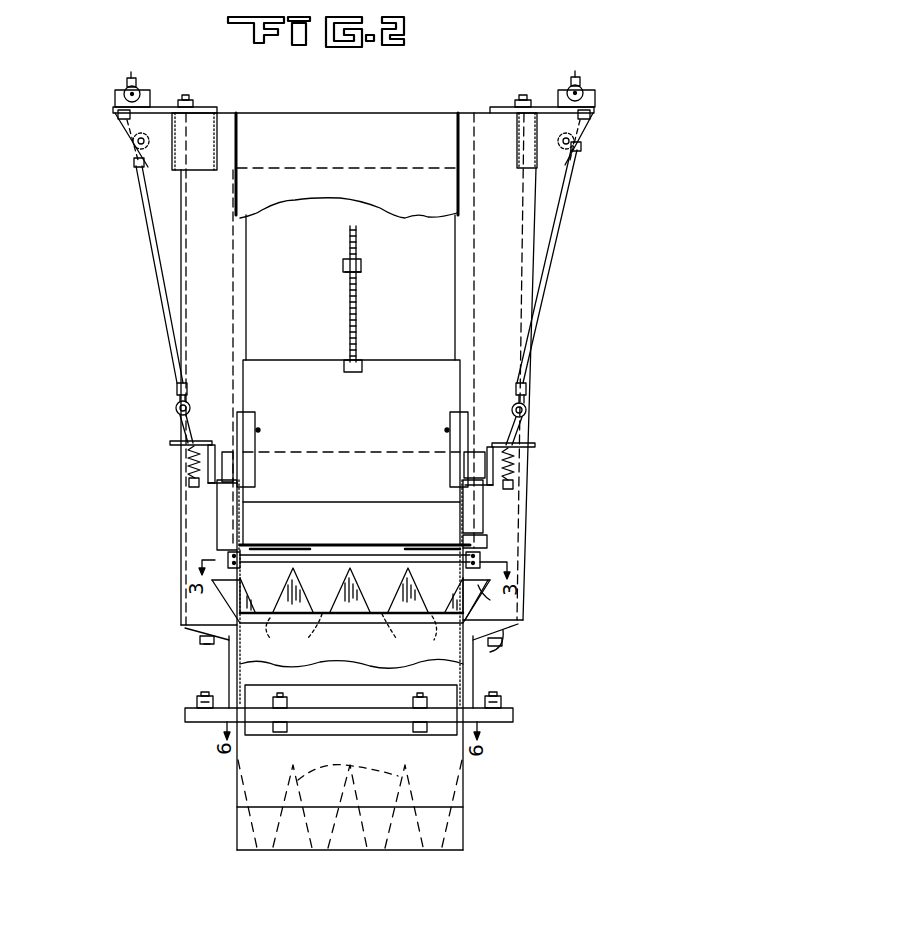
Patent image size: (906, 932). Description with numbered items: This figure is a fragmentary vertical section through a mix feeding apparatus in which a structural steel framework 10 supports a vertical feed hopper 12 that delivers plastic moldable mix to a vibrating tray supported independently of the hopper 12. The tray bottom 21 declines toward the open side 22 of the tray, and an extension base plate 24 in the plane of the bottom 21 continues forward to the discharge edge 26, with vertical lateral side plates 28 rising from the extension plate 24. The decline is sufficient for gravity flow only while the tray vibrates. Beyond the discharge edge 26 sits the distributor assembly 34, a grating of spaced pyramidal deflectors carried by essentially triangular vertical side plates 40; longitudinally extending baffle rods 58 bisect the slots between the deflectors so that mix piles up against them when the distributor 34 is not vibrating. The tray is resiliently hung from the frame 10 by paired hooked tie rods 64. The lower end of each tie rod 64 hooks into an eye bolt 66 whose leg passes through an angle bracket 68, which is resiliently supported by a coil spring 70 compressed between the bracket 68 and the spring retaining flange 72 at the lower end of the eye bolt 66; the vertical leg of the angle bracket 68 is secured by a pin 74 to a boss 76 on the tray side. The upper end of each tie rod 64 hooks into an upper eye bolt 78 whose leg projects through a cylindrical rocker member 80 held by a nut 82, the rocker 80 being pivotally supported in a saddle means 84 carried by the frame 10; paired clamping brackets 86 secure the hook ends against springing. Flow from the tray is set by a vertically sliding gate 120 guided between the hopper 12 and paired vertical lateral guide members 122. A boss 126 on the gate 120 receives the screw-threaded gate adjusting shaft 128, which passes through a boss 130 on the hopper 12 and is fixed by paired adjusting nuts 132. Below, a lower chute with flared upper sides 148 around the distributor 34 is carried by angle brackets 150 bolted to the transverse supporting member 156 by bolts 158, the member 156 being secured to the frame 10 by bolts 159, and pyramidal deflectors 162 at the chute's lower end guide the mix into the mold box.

The structural steel framework 10 is at (243, 104).
The vertical feed hopper 12 is at (377, 127).
The bottom of the tray 21 is at (355, 549).
The open side of the tray 22 is at (465, 541).
The extension base plate 24 is at (374, 560).
The forward discharge edge 26 is at (318, 563).
The lateral side plates 28 is at (223, 514).
The distributor assembly 34 is at (369, 626).
The triangular vertical side plates 40 is at (480, 592).
The baffle rods 58 is at (308, 640).
The hooked tie rods 64 is at (157, 289).
The eye bolt 66 is at (179, 427).
The angle bracket 68 is at (200, 441).
The coil spring 70 is at (188, 462).
The spring retaining flange 72 is at (192, 488).
The pin 74 is at (211, 484).
The boss 76 is at (230, 455).
The upper eye bolt 78 is at (122, 130).
The cylindrical rocker member 80 is at (141, 93).
The nut 82 is at (130, 73).
The saddle means 84 is at (115, 98).
The clamping brackets 86 is at (176, 390).
The vertically sliding gate 120 is at (378, 411).
The vertical lateral guide members 122 is at (252, 413).
The boss 126 is at (348, 372).
The gate adjusting shaft 128 is at (358, 317).
The boss 130 is at (343, 266).
The adjusting nuts 132 is at (362, 275).
The flared upper sides 148 is at (218, 600).
The angle brackets 150 is at (350, 699).
The transverse supporting member 156 is at (320, 713).
The bolts 158 is at (287, 701).
The bolts 159 is at (203, 692).
The pyramidal deflectors 162 is at (350, 795).